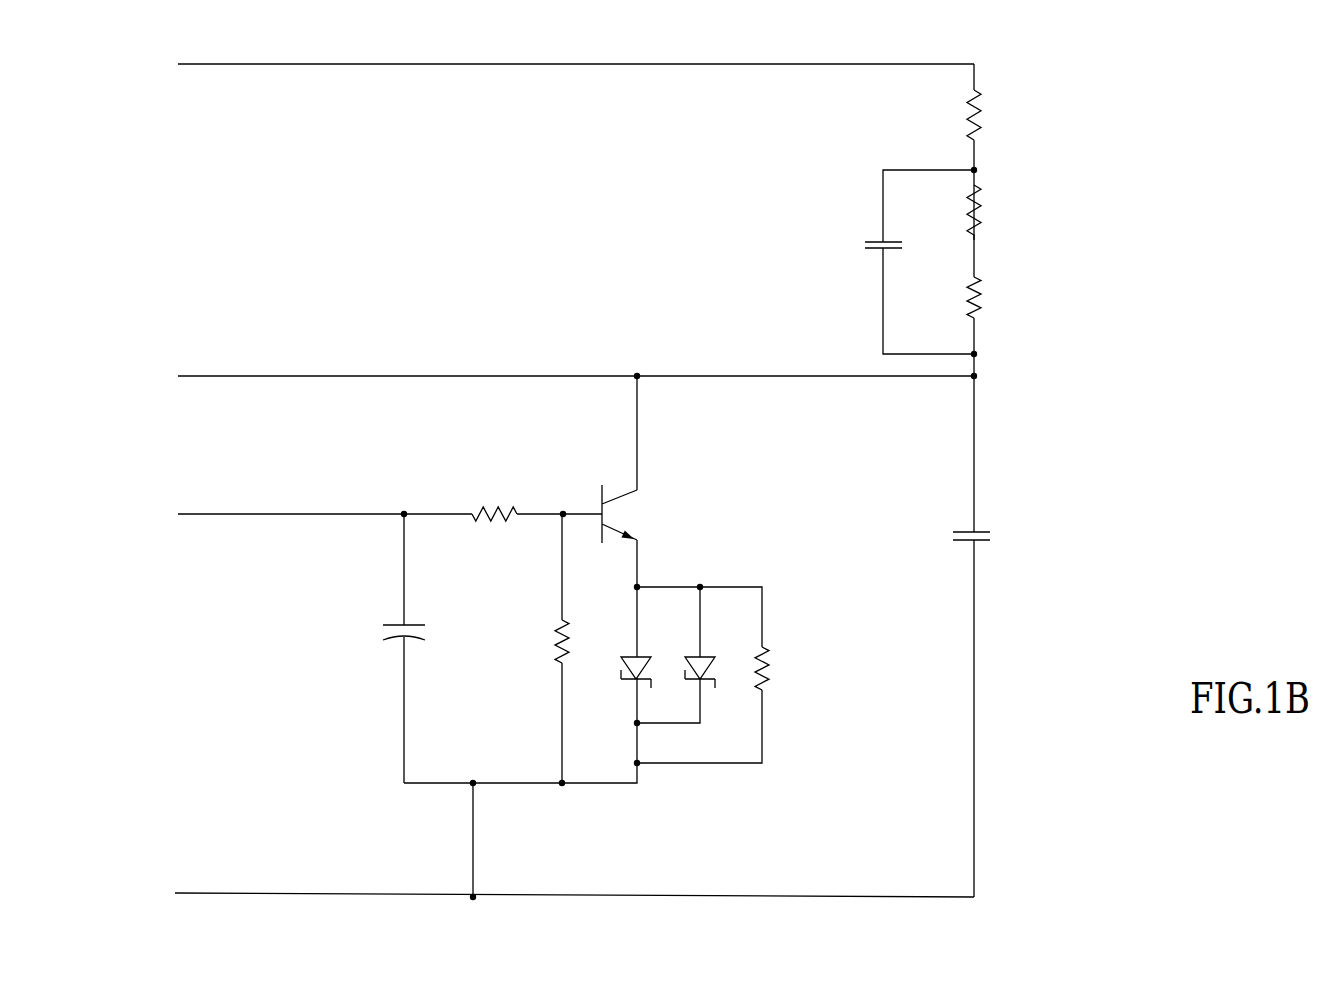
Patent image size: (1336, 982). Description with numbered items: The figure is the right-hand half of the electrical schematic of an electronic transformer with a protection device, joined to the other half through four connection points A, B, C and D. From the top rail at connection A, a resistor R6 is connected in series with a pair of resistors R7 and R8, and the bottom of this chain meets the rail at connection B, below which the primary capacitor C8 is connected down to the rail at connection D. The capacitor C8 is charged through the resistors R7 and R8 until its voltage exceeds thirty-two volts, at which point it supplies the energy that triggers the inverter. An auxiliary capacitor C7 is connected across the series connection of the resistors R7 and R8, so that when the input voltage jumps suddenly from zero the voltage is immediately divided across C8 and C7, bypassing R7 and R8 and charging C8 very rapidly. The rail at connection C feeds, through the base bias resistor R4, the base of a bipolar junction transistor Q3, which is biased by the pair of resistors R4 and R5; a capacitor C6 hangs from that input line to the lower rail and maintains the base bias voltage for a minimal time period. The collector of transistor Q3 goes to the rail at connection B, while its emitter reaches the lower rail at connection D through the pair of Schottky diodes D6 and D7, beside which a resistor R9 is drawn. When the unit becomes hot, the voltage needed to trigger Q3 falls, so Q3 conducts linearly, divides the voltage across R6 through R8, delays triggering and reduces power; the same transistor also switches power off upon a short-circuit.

The terminal A is at (564, 64).
The terminal B is at (564, 376).
The terminal C is at (378, 514).
The terminal D is at (563, 897).
The base bias resistor R4 is at (495, 499).
The resistor R5 is at (583, 640).
The resistor R6 is at (996, 115).
The resistor R7 is at (996, 212).
The resistor R8 is at (996, 295).
The resistor R9 is at (783, 666).
The capacitor C6 is at (416, 618).
The auxiliary capacitor C7 is at (919, 262).
The primary capacitor C8 is at (986, 519).
The Schottky diode D6 is at (649, 657).
The Schottky diode D7 is at (713, 657).
The bipolar junction transistor Q3 is at (641, 514).